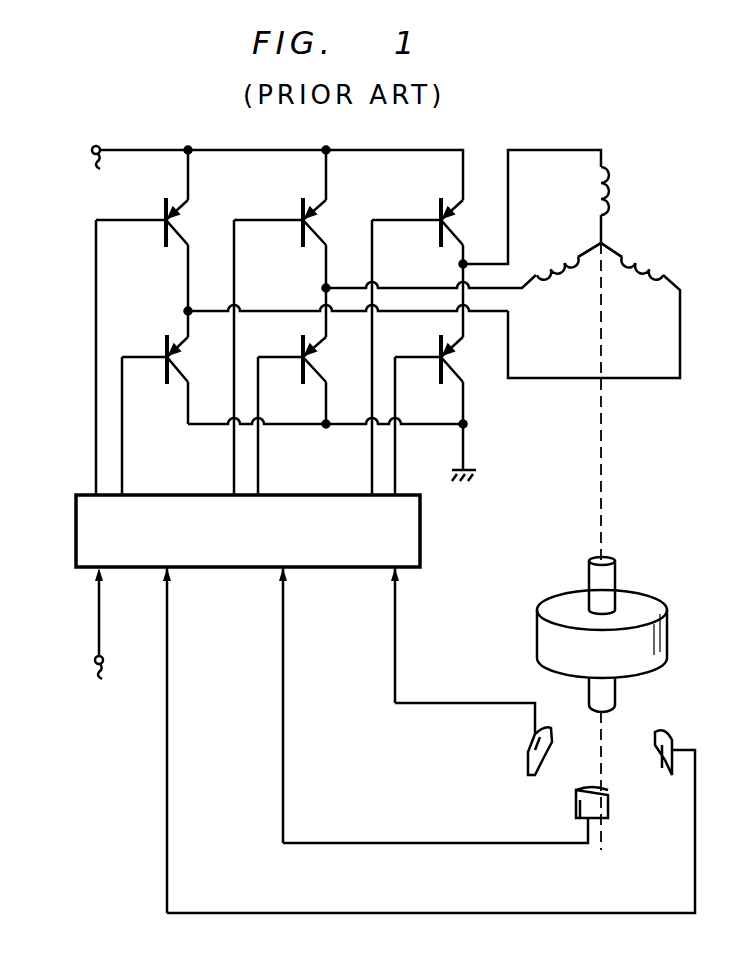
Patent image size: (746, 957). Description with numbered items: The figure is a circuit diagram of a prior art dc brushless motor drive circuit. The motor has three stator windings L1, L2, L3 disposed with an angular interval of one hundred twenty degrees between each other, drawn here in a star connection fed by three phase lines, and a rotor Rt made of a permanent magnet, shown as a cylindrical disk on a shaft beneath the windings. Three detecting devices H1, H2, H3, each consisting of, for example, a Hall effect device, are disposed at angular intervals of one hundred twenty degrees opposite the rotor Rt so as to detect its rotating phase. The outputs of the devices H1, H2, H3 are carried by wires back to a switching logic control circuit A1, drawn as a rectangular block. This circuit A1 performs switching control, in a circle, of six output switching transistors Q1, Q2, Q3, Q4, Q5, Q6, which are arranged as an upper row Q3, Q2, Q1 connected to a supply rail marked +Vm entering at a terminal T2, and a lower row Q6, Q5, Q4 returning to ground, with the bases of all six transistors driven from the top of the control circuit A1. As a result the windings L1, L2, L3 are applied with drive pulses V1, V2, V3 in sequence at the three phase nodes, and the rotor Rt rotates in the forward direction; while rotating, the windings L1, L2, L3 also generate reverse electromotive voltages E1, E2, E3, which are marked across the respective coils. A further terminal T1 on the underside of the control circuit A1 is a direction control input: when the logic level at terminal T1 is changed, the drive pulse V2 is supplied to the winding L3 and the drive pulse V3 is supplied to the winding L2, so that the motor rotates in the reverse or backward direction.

The motor supply voltage Vm is at (244, 170).
The supply terminal T2 is at (110, 180).
The terminal T1 is at (95, 653).
The output switching transistor Q1 is at (438, 236).
The output switching transistor Q2 is at (300, 236).
The output switching transistor Q3 is at (163, 236).
The output switching transistor Q4 is at (438, 373).
The output switching transistor Q5 is at (300, 373).
The output switching transistor Q6 is at (164, 373).
The drive pulse V1 is at (532, 191).
The drive pulse V2 is at (433, 268).
The drive pulse V3 is at (594, 330).
The stator winding L1 is at (611, 200).
The stator winding L2 is at (553, 277).
The stator winding L3 is at (648, 277).
The reverse electromotive voltage E1 is at (580, 213).
The reverse electromotive voltage E2 is at (573, 237).
The reverse electromotive voltage E3 is at (638, 247).
The switching logic control circuit A1 is at (221, 568).
The rotor Rt is at (667, 645).
The detecting device H1 is at (532, 776).
The detecting device H2 is at (610, 812).
The detecting device H3 is at (680, 728).